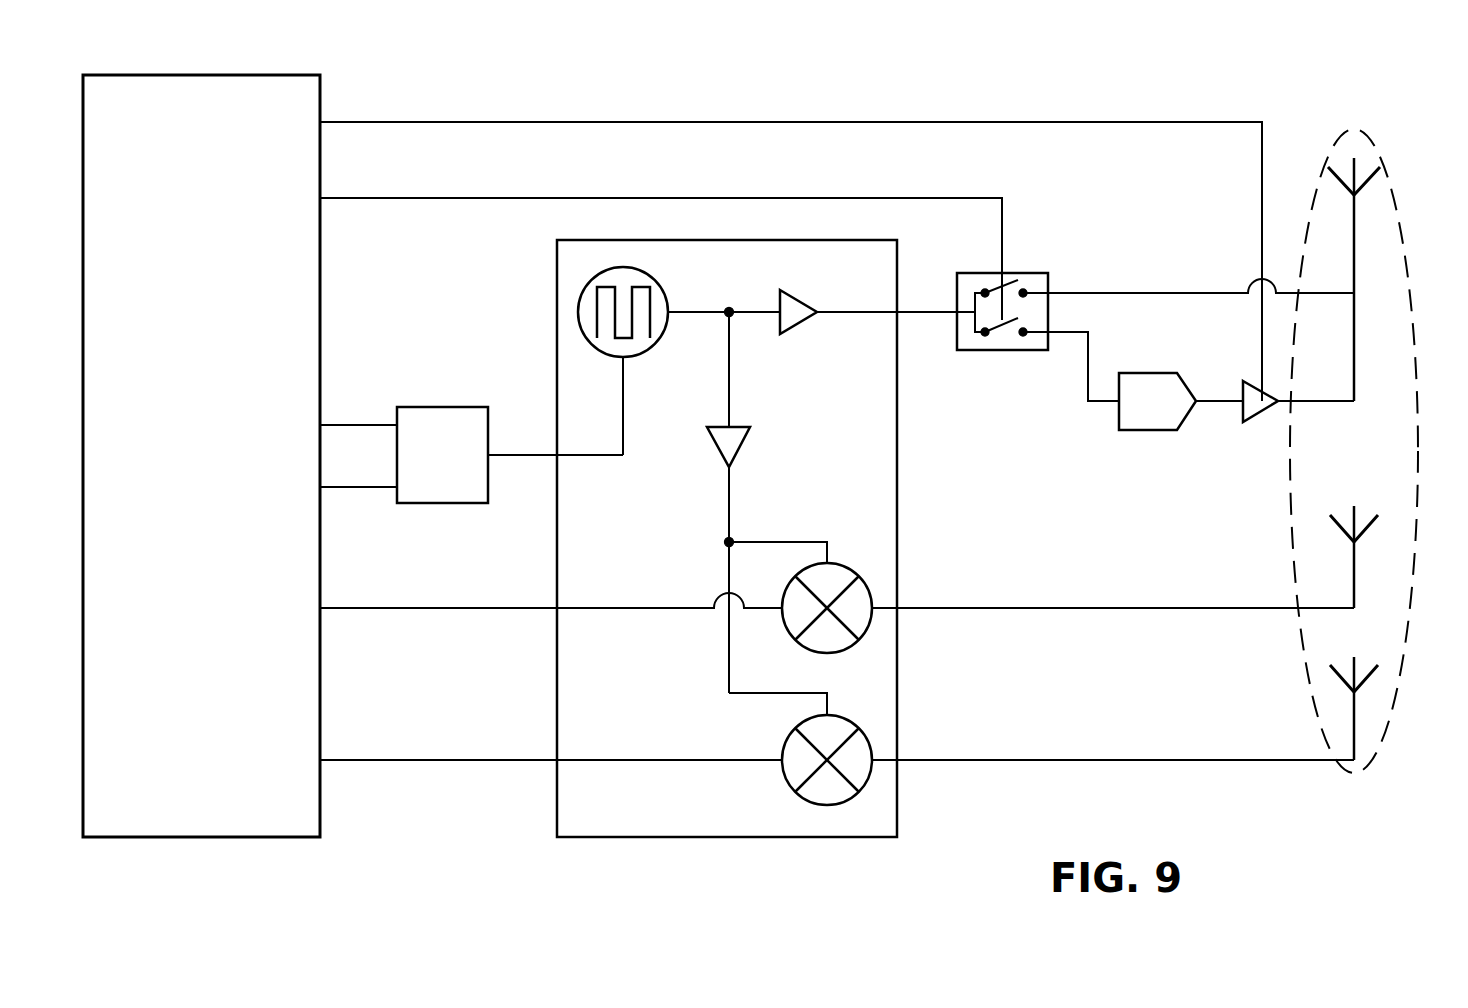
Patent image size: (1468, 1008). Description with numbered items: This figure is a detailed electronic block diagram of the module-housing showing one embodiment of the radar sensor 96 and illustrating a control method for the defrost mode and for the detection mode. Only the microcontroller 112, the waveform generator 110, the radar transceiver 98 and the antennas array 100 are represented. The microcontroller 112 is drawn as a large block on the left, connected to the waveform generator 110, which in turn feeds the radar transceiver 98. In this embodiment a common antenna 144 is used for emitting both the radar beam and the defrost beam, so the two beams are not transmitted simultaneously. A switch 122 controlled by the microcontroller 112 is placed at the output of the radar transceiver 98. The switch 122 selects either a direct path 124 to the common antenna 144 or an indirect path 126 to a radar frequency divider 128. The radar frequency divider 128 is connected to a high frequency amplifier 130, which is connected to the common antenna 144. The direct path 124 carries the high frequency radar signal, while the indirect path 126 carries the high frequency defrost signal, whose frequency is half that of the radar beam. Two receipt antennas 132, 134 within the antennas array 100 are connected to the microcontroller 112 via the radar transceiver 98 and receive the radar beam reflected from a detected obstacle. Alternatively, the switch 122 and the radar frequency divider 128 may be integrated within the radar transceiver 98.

The radar sensor 96 is at (603, 80).
The radar transceiver 98 is at (607, 837).
The antennas array 100 is at (1333, 152).
The waveform generator 110 is at (463, 468).
The microcontroller 112 is at (223, 481).
The switch 122 is at (1030, 276).
The direct path 124 is at (1132, 290).
The indirect path 126 is at (1083, 370).
The radar frequency divider 128 is at (1117, 417).
The high frequency amplifier 130 is at (1245, 417).
The receipt antenna 132 is at (1354, 568).
The receipt antenna 134 is at (1354, 718).
The common antenna 144 is at (1354, 245).